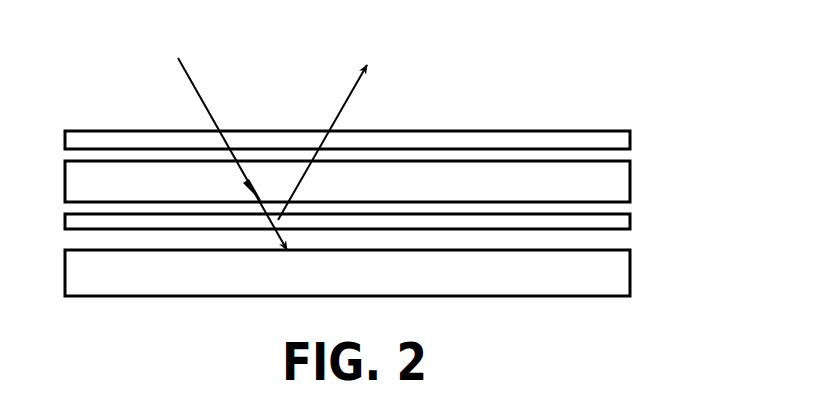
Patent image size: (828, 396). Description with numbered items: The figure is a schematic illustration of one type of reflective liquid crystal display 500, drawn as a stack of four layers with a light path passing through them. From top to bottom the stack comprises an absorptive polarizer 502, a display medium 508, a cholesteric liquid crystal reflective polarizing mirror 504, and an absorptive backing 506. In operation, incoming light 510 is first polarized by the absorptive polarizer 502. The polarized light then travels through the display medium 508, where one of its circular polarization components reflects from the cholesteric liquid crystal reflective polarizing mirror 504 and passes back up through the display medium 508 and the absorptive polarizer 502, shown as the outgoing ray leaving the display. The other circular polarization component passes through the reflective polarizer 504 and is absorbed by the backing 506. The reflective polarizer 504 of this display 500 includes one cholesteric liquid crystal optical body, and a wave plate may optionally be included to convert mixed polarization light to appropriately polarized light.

The reflective liquid crystal display 500 is at (490, 83).
The absorptive polarizer 502 is at (631, 140).
The cholesteric liquid crystal reflective polarizing mirror 504 is at (631, 220).
The absorptive backing 506 is at (631, 268).
The display medium 508 is at (631, 181).
The light 510 is at (190, 80).